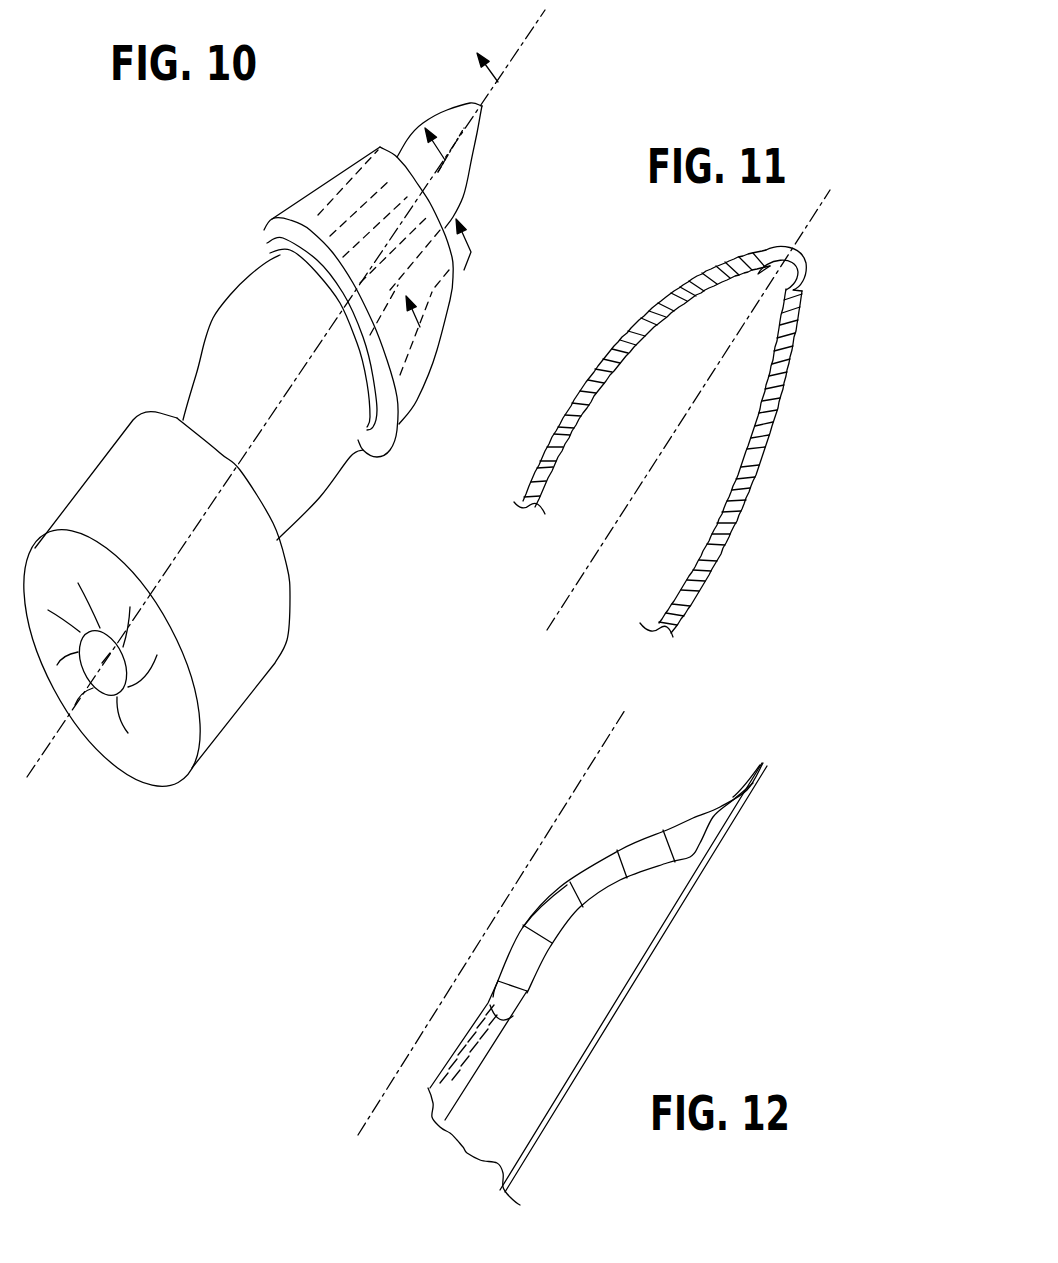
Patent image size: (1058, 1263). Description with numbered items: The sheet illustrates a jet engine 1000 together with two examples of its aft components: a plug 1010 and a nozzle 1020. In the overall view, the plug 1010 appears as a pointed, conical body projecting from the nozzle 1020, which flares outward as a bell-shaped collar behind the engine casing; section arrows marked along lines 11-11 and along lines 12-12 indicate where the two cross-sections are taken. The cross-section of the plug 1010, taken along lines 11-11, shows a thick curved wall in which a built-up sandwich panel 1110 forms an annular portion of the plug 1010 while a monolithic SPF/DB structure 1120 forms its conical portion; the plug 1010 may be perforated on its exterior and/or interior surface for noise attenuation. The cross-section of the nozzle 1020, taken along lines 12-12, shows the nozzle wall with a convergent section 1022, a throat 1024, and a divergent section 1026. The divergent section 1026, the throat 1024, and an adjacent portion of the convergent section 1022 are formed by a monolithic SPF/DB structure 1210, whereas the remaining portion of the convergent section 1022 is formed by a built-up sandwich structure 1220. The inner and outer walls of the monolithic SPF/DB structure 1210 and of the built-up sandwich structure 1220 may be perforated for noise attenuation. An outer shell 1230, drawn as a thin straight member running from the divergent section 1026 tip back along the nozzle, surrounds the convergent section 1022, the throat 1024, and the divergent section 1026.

In FIG. 10, the jet engine 1000 is at (206, 296).
In FIG. 10, the plug 1010 is at (473, 141).
In FIG. 11, the plug 1010 is at (626, 429).
In FIG. 10, the nozzle 1020 is at (302, 182).
In FIG. 12, the nozzle 1020 is at (555, 960).
In FIG. 12, the convergent section 1022 is at (428, 1090).
In FIG. 12, the throat 1024 is at (551, 892).
In FIG. 12, the divergent section 1026 is at (745, 784).
In FIG. 11, the built-up sandwich panel 1110 is at (620, 350).
In FIG. 11, the monolithic SPF/DB structure 1120 is at (723, 267).
In FIG. 12, the monolithic SPF/DB structure 1210 is at (693, 817).
In FIG. 12, the built-up sandwich structure 1220 is at (478, 1068).
In FIG. 12, the outer shell 1230 is at (635, 970).
In FIG. 10, the section lines 11- 11 is at (454, 99).
In FIG. 10, the section lines 12- 12 is at (452, 283).